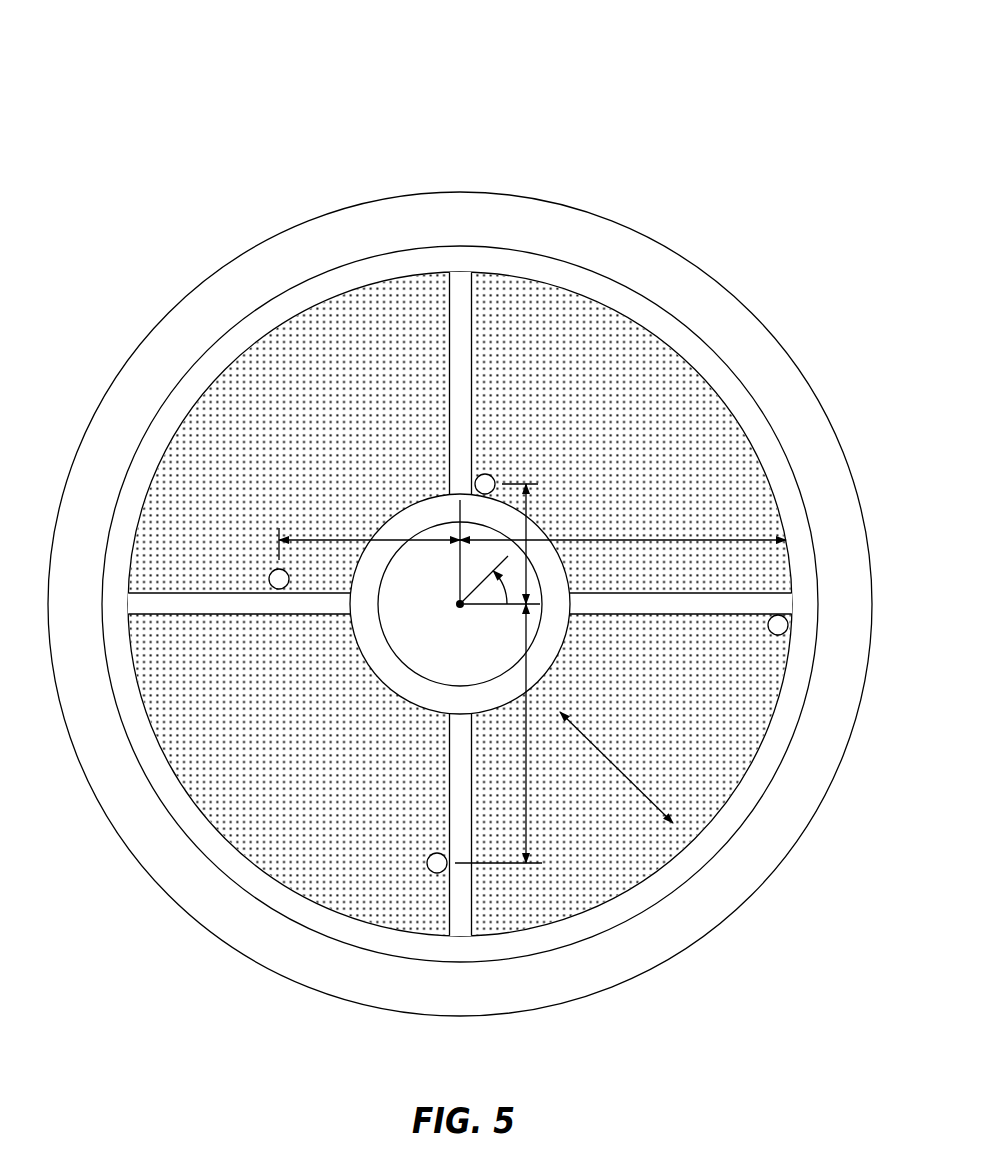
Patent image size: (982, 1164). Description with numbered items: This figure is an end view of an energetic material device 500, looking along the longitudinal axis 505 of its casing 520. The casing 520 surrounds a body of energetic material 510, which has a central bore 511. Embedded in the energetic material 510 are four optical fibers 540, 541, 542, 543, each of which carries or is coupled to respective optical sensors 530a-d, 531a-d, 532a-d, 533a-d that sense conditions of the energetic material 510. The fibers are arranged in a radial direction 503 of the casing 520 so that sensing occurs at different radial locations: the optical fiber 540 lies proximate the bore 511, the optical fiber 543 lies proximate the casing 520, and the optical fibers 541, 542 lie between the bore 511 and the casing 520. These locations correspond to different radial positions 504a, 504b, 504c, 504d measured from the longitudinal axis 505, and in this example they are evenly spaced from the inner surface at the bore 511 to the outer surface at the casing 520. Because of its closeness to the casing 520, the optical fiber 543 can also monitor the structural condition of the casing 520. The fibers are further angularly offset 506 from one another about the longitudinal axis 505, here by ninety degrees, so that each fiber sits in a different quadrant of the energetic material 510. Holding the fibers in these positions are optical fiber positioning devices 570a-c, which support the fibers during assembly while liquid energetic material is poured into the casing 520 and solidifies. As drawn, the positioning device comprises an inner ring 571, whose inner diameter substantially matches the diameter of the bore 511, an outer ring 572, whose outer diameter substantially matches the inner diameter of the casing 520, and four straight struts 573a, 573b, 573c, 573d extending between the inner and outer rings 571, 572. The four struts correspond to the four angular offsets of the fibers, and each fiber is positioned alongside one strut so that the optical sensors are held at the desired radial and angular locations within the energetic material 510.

The energetic material device 500 is at (355, 70).
The casing 520 is at (698, 288).
The optical fiber positioning devices 570a-c is at (258, 293).
The outer ring 572 is at (190, 388).
The energetic material 510 is at (678, 453).
The strut 573a is at (449, 358).
The strut 573b is at (213, 614).
The strut 573c is at (449, 752).
The strut 573d is at (612, 614).
The inner ring 571 is at (423, 508).
The bore 511 is at (402, 588).
The longitudinal axis 505 is at (456, 607).
The angular offset 506 is at (497, 580).
The optical fiber 540 is at (528, 443).
The optical sensors 530a-d is at (479, 477).
The optical fiber 541 is at (232, 545).
The optical sensors 531a-d is at (271, 573).
The optical fiber 542 is at (393, 831).
The optical sensors 532a-d is at (430, 856).
The optical fiber 543 is at (728, 661).
The optical sensors 533a-d is at (771, 632).
The radial position 504a is at (527, 520).
The radial position 504b is at (336, 540).
The radial position 504c is at (527, 808).
The radial position 504d is at (660, 540).
The radial direction 503 is at (622, 772).